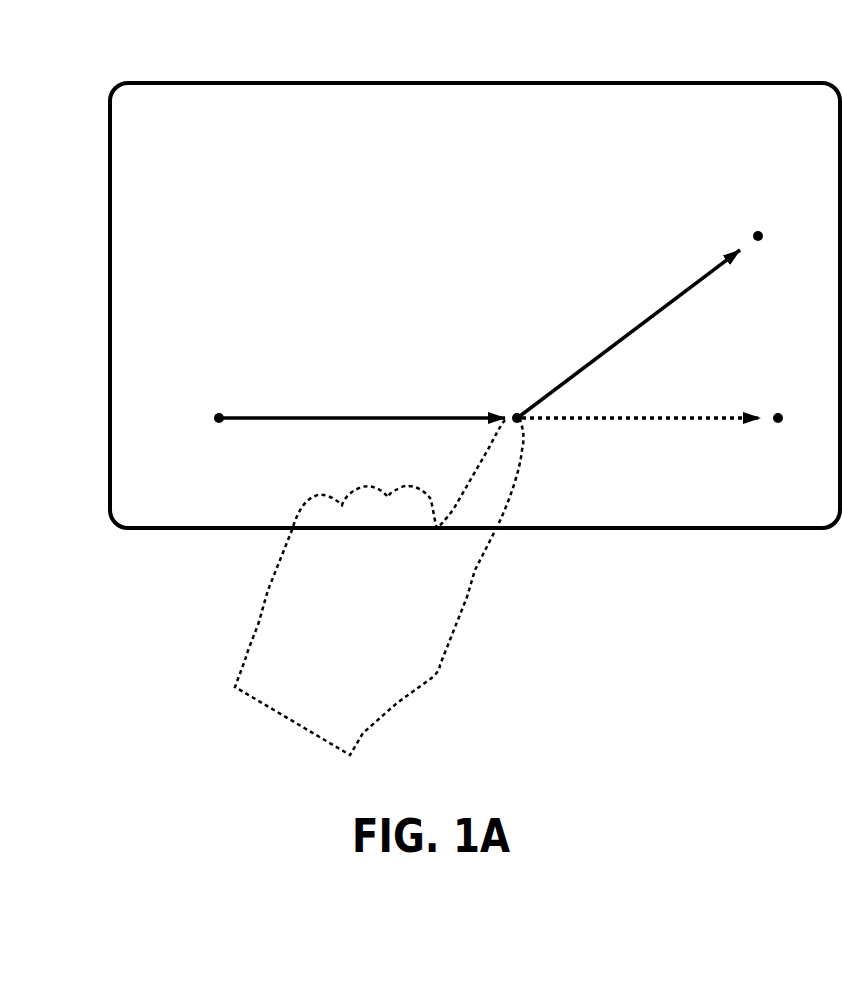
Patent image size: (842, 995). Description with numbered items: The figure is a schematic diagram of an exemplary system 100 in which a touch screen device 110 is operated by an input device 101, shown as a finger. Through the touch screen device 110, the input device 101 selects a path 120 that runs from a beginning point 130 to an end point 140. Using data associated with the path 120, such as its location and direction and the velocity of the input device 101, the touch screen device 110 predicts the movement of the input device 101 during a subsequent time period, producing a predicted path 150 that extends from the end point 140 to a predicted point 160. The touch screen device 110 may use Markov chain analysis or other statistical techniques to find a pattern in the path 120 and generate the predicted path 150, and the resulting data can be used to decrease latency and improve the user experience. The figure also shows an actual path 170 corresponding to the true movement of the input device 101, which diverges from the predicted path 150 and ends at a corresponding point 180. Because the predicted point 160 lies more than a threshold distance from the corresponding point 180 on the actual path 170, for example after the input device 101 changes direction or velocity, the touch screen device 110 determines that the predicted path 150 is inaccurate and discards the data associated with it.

The system 100 is at (148, 68).
The touch screen device 110 is at (242, 129).
The input device 101 is at (372, 582).
The path 120 is at (364, 417).
The beginning point 130 is at (210, 406).
The end point 140 is at (519, 406).
The predicted path 150 is at (671, 416).
The predicted point 160 is at (782, 402).
The actual path 170 is at (598, 341).
The corresponding point 180 is at (746, 228).